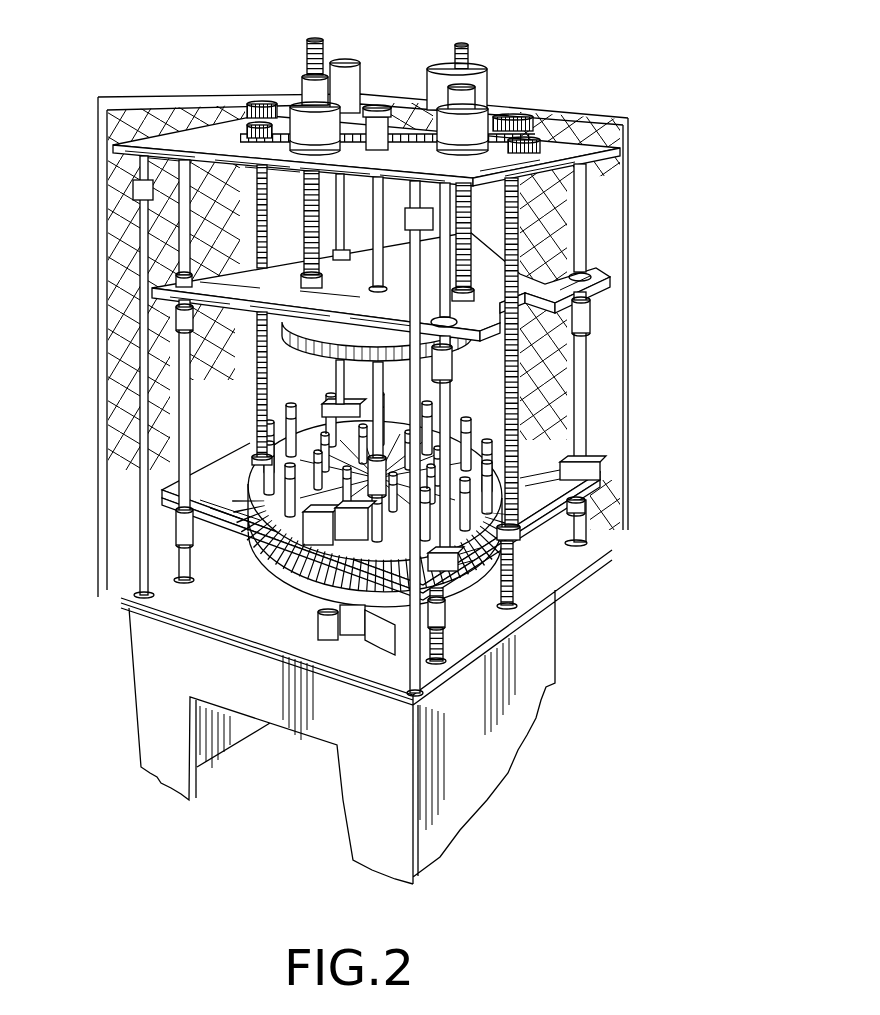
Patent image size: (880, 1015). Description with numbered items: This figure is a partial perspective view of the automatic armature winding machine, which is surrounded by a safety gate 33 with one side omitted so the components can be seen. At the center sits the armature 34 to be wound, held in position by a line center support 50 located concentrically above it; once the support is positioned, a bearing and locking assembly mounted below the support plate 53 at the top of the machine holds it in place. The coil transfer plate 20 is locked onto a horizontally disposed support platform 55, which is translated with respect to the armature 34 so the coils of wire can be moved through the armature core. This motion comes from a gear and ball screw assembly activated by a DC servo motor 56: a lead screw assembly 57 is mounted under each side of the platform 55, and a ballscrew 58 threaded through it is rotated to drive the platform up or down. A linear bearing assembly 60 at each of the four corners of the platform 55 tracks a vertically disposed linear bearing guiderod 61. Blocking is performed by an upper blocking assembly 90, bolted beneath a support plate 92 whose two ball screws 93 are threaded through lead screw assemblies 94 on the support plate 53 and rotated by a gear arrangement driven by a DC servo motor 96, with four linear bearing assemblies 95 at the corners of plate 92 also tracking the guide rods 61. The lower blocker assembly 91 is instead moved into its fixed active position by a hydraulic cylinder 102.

The coil transfer plate 20 is at (182, 580).
The safety gate 33 is at (123, 116).
The armature 34 is at (280, 480).
The line center support 50 is at (380, 405).
The support plate 53 is at (567, 148).
The support platform 55 is at (532, 512).
The DC servo motor 56 is at (345, 58).
The lead screw assembly 57 is at (508, 558).
The ballscrew 58 is at (510, 407).
The linear bearing assembly 60 is at (176, 525).
The linear bearing guiderod 61 is at (590, 190).
The upper blocking assembly 90 is at (307, 343).
The lower blocker assembly 91 is at (283, 593).
The support plate 92 is at (610, 280).
The ball screw 93 is at (307, 237).
The lead screw assembly 94 is at (292, 104).
The linear bearing assembly 95 is at (172, 317).
The DC servo motor 96 is at (440, 66).
The hydraulic cylinder 102 is at (373, 642).